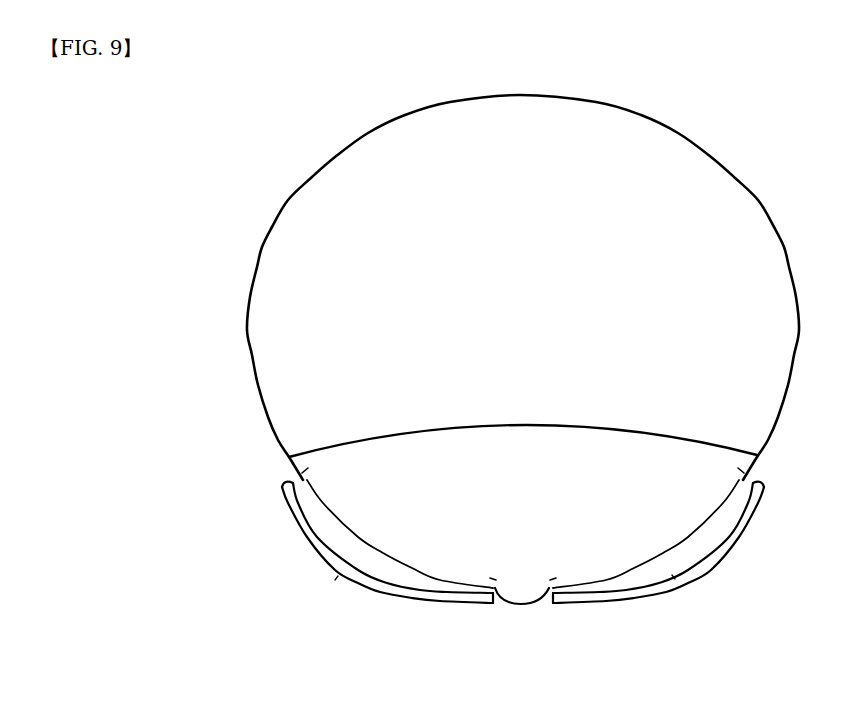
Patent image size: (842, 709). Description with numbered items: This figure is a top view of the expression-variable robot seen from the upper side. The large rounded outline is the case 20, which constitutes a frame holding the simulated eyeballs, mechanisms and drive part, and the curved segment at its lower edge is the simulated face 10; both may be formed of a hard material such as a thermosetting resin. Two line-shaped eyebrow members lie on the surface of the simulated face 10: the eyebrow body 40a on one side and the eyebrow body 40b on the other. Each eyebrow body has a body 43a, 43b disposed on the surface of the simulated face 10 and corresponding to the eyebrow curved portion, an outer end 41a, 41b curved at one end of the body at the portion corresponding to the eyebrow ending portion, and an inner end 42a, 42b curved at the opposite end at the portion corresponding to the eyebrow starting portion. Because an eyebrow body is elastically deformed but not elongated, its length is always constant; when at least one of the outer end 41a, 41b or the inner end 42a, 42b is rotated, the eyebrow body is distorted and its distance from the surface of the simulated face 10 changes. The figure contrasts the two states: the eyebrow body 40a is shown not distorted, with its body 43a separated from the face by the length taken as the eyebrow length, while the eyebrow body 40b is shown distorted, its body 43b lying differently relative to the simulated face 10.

The case 20 is at (638, 117).
The simulated face 10 is at (593, 430).
The outer end 41a is at (305, 470).
The outer end 41b is at (741, 470).
The inner end 42a is at (493, 577).
The inner end 42b is at (553, 577).
The body 43a is at (291, 520).
The body 43b is at (600, 596).
The eyebrow body 40a is at (338, 576).
The eyebrow body 40b is at (672, 575).